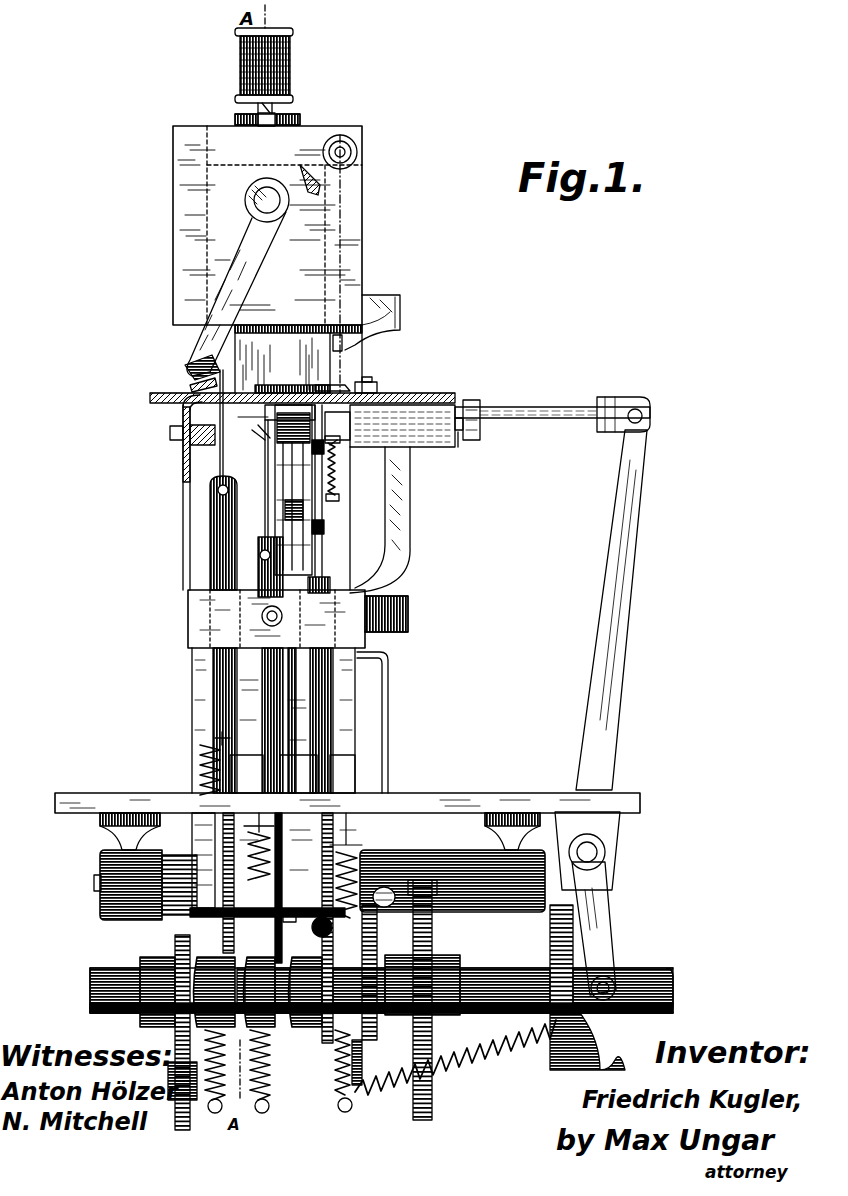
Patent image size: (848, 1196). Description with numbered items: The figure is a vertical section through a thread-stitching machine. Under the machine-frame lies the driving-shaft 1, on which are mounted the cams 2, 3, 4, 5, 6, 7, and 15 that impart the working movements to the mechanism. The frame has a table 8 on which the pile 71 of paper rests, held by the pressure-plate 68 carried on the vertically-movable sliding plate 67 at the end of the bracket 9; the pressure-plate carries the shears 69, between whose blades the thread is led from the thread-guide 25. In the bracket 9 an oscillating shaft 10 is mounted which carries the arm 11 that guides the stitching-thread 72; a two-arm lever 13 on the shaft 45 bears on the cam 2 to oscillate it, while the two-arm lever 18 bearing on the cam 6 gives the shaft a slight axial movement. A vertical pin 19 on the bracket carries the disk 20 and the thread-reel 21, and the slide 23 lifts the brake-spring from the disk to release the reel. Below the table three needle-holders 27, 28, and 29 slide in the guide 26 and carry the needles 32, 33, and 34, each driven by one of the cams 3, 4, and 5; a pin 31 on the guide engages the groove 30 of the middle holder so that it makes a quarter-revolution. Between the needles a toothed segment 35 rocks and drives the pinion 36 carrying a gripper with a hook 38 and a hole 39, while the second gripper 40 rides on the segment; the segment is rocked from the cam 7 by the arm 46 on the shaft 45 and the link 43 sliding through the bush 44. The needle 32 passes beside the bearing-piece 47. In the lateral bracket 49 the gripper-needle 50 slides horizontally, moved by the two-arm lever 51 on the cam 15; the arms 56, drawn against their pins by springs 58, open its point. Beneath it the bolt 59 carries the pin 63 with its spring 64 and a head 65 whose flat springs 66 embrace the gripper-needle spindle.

The driving-shaft 1 is at (652, 970).
The cam 2 is at (170, 950).
The cam 3 is at (225, 950).
The cam 4 is at (295, 920).
The cam 5 is at (288, 950).
The cam 6 is at (378, 945).
The cam 7 is at (435, 946).
The table 8 is at (175, 405).
The bracket 9 is at (176, 304).
The oscillating shaft 10 is at (256, 192).
The arm 11 is at (248, 280).
The two-arm vertically-oscillating lever 13 is at (196, 1100).
The cam 15 is at (550, 1055).
The vertically-oscillating two-arm lever 18 is at (338, 1105).
The vertical pin 19 is at (272, 108).
The disk 20 is at (300, 119).
The thread-reel 21 is at (240, 68).
The slide 23 is at (265, 127).
The thread-guide 25 is at (362, 340).
The guide 26 is at (195, 632).
The needle-holder 27 is at (220, 690).
The needle-holder 28 is at (276, 712).
The needle-holder 29 is at (325, 697).
The groove 30 is at (282, 648).
The pin 31 is at (282, 614).
The needle 32 is at (220, 440).
The needle 33 is at (266, 490).
The needle 34 is at (326, 515).
The segment of a toothed wheel 35 is at (283, 465).
The pinion 36 is at (291, 410).
The hook 38 is at (337, 480).
The hole 39 is at (338, 460).
The second gripper 40 is at (340, 385).
The link 43 is at (389, 725).
The bush 44 is at (246, 412).
The shaft 45 is at (466, 930).
The arm 46 is at (392, 888).
The lateral bearing-piece 47 is at (190, 450).
The lateral bracket 49 is at (405, 480).
The gripper-needle 50 is at (512, 410).
The two-arm lever 51 is at (617, 550).
The arms 56 is at (290, 392).
The spring 58 is at (259, 429).
The bolt 59 is at (460, 440).
The pin 63 is at (340, 440).
The spring 64 is at (340, 497).
The head 65 is at (480, 438).
The flat springs 66 is at (474, 401).
The sliding plate 67 is at (330, 348).
The pressure-plate 68 is at (160, 393).
The shears 69 is at (365, 393).
The pile 71 is at (412, 398).
The stitching-thread 72 is at (185, 380).